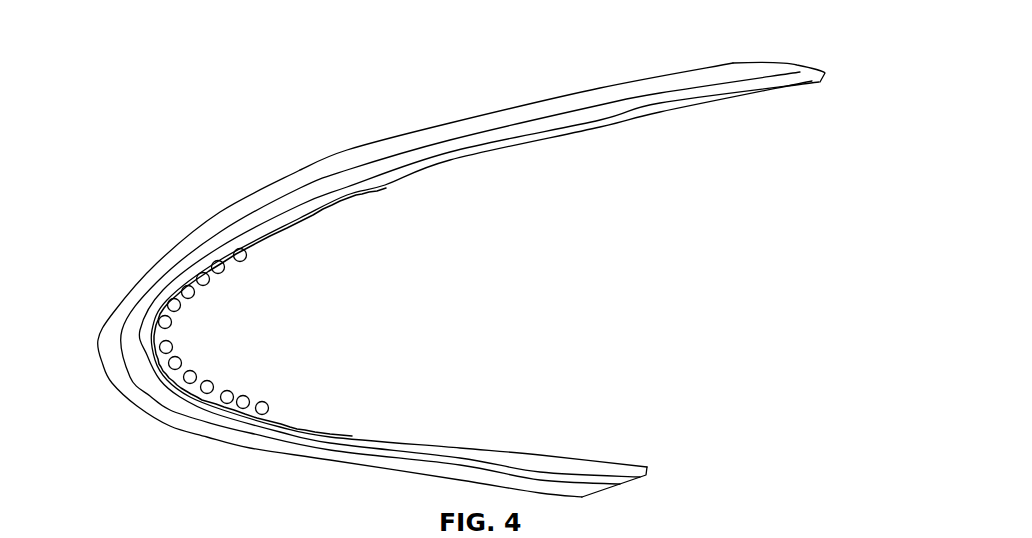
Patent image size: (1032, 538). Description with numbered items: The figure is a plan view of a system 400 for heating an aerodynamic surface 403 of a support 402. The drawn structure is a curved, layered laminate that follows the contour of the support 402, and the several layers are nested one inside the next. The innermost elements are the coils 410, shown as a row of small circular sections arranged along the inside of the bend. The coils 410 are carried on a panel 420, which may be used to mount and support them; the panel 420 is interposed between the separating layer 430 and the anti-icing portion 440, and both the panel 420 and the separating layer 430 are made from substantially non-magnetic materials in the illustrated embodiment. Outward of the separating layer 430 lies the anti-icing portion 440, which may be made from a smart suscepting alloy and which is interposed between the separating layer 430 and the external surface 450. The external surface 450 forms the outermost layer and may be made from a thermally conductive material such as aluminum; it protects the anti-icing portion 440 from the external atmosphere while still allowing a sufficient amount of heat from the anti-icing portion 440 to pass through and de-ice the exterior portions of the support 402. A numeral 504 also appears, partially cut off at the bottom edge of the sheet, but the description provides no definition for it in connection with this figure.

The system 400 is at (444, 256).
The support 402 is at (404, 131).
The aerodynamic surface 403 is at (108, 392).
The anti-icing portion 440 is at (231, 216).
The external surface 450 is at (322, 163).
The separating layer 430 is at (428, 165).
The panel 420 is at (252, 246).
The coils 410 is at (180, 311).
The element 504 is at (644, 537).